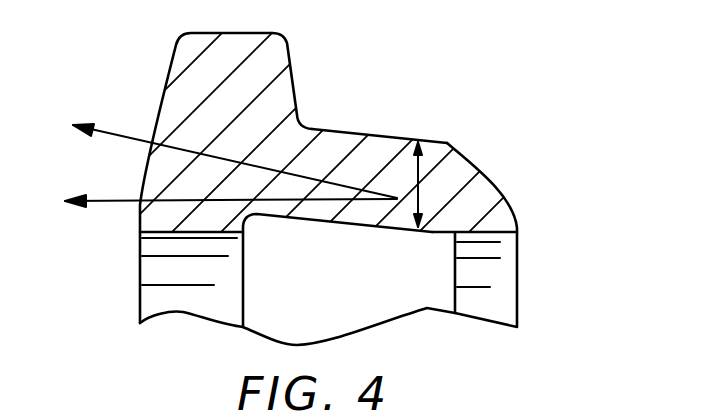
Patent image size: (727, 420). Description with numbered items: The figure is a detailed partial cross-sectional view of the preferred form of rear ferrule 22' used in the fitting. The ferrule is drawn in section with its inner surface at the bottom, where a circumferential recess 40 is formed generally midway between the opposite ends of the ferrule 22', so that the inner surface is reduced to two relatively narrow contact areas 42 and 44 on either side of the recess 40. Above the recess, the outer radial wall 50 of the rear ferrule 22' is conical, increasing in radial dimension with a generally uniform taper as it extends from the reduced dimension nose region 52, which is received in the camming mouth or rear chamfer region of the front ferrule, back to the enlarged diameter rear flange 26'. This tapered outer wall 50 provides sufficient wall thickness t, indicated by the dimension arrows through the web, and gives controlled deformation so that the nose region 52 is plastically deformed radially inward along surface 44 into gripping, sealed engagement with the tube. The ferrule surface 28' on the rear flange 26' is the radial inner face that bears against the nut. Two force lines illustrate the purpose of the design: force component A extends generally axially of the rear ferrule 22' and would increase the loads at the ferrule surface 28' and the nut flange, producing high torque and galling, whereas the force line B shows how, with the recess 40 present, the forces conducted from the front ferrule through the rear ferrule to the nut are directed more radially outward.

The rear ferrule 22' is at (340, 175).
The ferrule surface 28' is at (179, 124).
The rear flange 26' is at (334, 73).
The outer radial wall 50 is at (358, 133).
The nose region 52 is at (489, 207).
The wall thickness t is at (418, 178).
The circumferential recess 40 is at (297, 217).
The contact area 42 is at (155, 268).
The contact area 44 is at (503, 272).
The force component A is at (112, 201).
The force line B is at (123, 137).